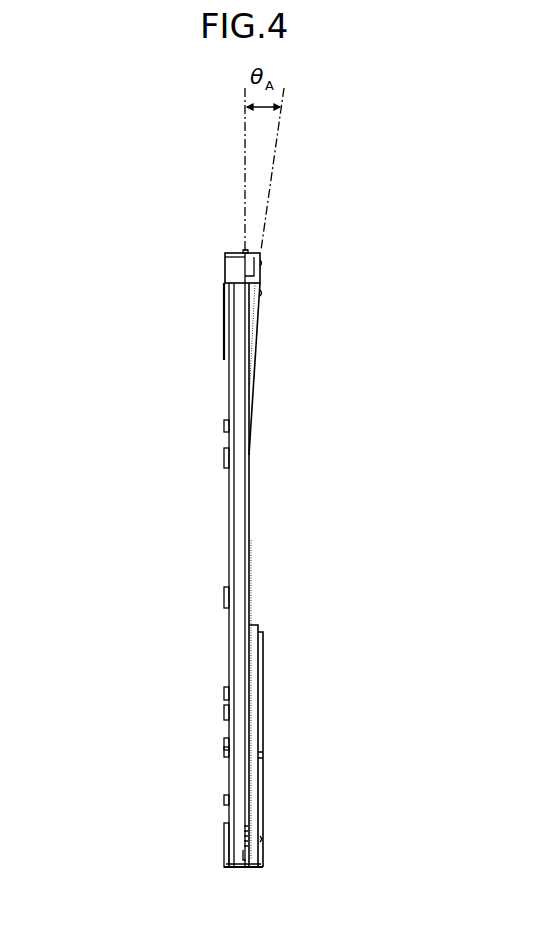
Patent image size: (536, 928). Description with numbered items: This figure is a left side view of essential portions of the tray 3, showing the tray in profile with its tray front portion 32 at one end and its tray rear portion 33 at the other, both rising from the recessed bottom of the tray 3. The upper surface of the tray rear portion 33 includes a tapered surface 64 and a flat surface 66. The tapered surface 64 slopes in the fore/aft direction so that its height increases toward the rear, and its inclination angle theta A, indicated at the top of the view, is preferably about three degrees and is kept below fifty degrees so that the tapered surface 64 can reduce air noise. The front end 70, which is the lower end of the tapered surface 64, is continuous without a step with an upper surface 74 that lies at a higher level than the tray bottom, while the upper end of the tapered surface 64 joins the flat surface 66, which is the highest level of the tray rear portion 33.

The tray 3 is at (170, 284).
The tray rear portion 33 is at (277, 253).
The flat surface 66 is at (262, 277).
The tapered surface 64 is at (257, 318).
The front end 70 is at (250, 451).
The upper surface 74 is at (250, 553).
The tray front portion 32 is at (263, 815).